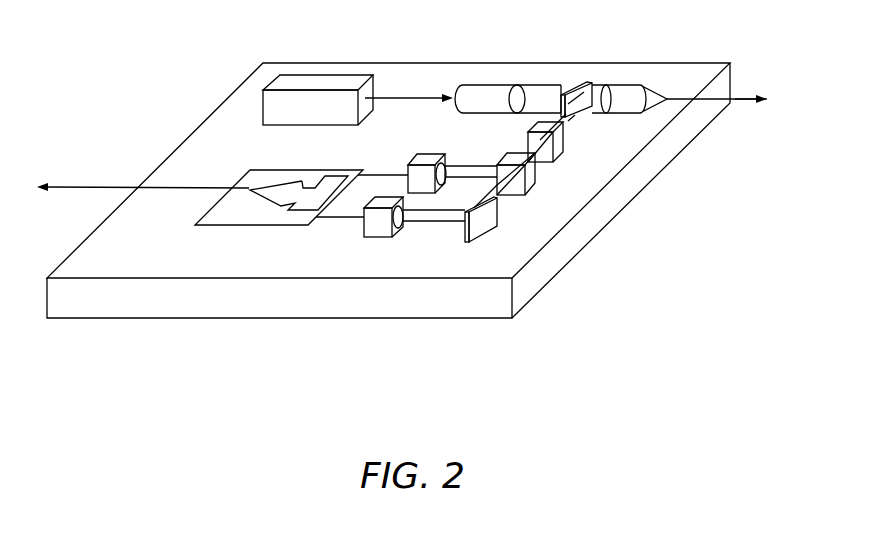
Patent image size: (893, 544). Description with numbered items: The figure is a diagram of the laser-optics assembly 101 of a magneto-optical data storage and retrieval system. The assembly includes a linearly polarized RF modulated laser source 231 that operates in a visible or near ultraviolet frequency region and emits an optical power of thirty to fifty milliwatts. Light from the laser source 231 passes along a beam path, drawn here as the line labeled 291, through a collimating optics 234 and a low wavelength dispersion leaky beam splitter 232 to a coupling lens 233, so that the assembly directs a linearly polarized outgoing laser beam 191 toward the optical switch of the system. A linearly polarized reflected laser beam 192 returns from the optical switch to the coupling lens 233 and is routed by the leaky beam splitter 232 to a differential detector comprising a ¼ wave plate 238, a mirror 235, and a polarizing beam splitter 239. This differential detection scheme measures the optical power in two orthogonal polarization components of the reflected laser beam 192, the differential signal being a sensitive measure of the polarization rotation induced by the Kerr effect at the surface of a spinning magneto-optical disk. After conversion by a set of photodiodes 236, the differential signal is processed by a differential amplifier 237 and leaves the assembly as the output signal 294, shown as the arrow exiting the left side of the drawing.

The laser-optics assembly 101 is at (200, 80).
The linearly polarized RF modulated laser source 231 is at (339, 69).
The laser beam 291 is at (420, 60).
The collimating optics 234 is at (508, 63).
The low wavelength dispersion leaky beam splitter 232 is at (592, 81).
The coupling lens 233 is at (653, 82).
The reflected laser beam 192 is at (743, 78).
The outgoing laser beam 191 is at (771, 130).
The output signal 294 is at (87, 186).
The differential amplifier 237 is at (279, 266).
The set of photodiodes 236 is at (432, 197).
The mirror 235 is at (557, 254).
The polarizing beam splitter 239 is at (535, 191).
The ¼ wave plate 238 is at (565, 163).